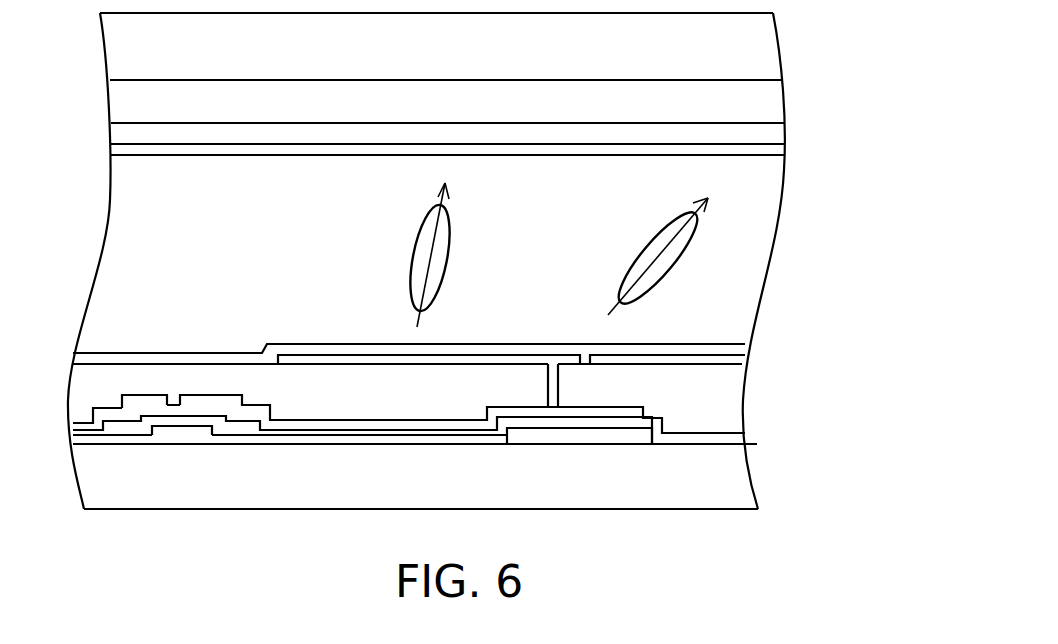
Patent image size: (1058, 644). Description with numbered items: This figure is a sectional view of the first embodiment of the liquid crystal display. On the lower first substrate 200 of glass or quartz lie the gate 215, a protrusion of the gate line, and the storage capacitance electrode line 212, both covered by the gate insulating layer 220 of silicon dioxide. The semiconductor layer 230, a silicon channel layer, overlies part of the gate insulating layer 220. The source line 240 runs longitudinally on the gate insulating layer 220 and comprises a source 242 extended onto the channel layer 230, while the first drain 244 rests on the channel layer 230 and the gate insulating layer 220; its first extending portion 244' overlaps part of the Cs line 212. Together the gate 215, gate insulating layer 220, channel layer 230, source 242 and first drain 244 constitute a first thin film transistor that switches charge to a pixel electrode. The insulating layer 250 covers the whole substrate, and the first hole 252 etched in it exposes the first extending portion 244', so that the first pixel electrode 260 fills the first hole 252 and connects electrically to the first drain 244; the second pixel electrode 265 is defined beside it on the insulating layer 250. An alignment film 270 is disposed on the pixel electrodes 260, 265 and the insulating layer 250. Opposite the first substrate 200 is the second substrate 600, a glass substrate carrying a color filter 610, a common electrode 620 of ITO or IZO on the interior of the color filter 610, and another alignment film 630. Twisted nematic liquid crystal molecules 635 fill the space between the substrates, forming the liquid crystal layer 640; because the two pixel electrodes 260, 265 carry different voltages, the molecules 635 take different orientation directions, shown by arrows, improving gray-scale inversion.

The first substrate 200 is at (743, 490).
The storage capacitance electrode line 212 is at (600, 430).
The gate 215 is at (200, 436).
The gate insulating layer 220 is at (735, 437).
The semiconductor layer 230 is at (138, 432).
The source line 240 is at (86, 423).
The source 242 is at (124, 415).
The first drain 244 is at (301, 308).
The first extending portion 244' is at (664, 478).
The insulating layer 250 is at (735, 408).
The first hole 252 is at (560, 384).
The first pixel electrode 260 is at (322, 366).
The second pixel electrode 265 is at (740, 363).
The alignment film 270 is at (745, 348).
The second substrate 600 is at (755, 52).
The color filter 610 is at (765, 102).
The common electrode 620 is at (765, 135).
The alignment film 630 is at (773, 150).
The liquid crystal molecules 635 is at (448, 220).
The liquid crystal layer 640 is at (760, 245).